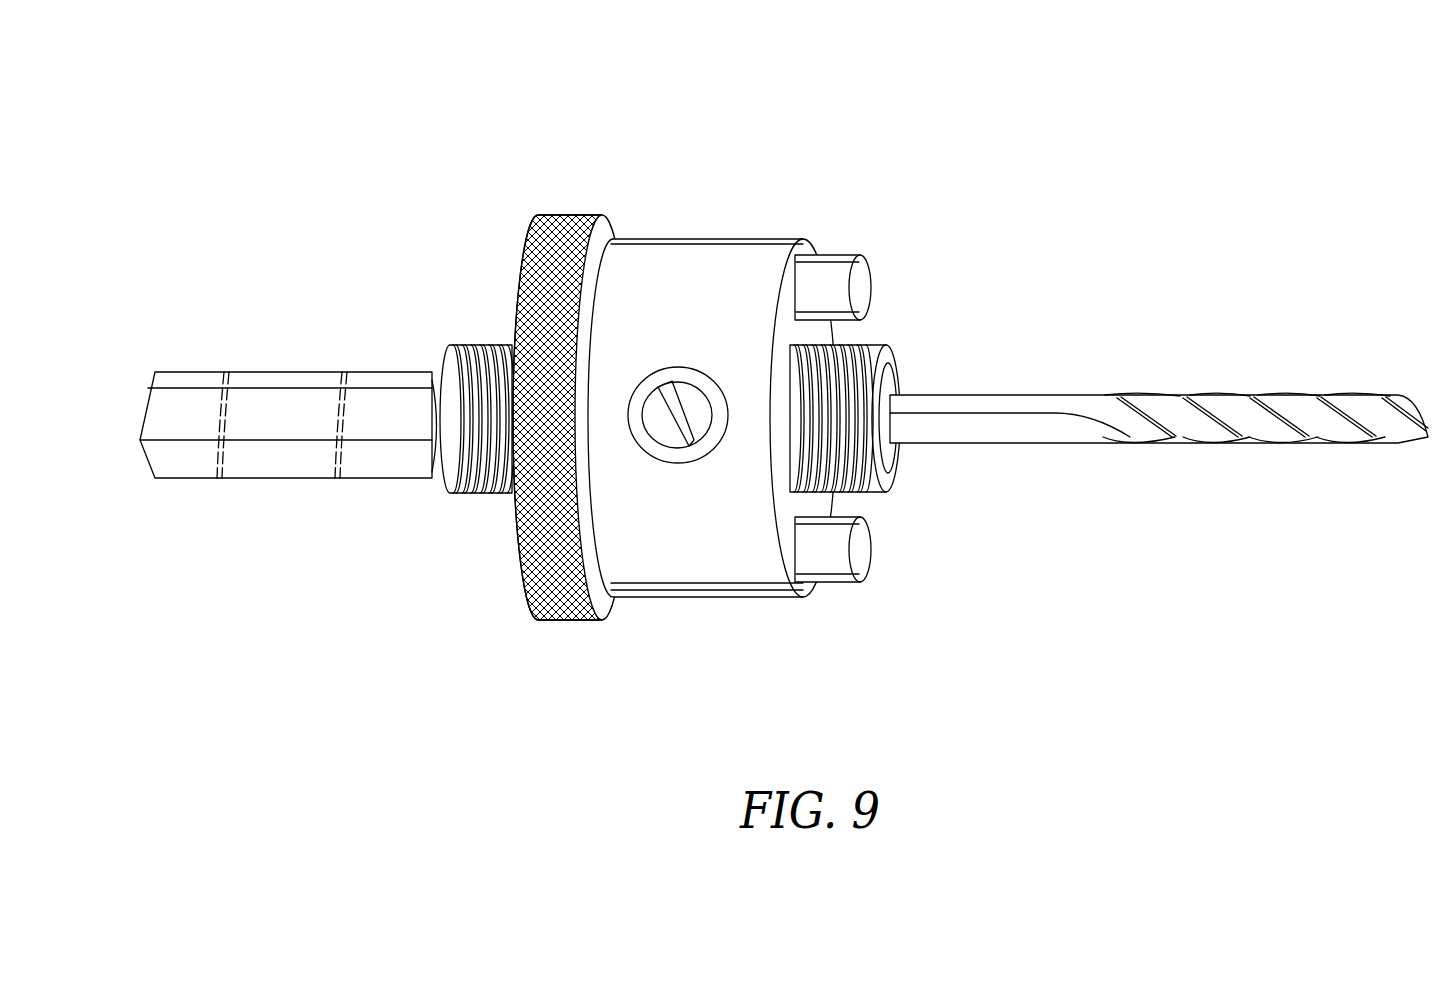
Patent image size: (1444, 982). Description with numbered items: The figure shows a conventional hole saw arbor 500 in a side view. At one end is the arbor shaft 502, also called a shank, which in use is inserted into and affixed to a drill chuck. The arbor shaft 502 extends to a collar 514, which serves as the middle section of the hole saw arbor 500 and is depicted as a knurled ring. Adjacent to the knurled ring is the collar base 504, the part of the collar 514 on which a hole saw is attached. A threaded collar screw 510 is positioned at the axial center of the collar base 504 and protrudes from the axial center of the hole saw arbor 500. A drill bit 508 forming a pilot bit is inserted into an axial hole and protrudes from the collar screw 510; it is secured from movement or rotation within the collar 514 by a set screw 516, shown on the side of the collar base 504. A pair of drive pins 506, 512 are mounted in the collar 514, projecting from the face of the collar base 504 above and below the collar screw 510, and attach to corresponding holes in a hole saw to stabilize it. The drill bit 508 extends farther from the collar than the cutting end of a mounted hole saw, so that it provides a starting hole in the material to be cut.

The hole saw arbor 500 is at (1282, 162).
The arbor shaft 502 is at (435, 335).
The collar base 504 is at (727, 236).
The drive pin 506 is at (846, 256).
The drill bit 508 is at (1420, 345).
The collar screw 510 is at (906, 468).
The drive pin 512 is at (850, 587).
The collar 514 is at (852, 647).
The set screw 516 is at (684, 433).